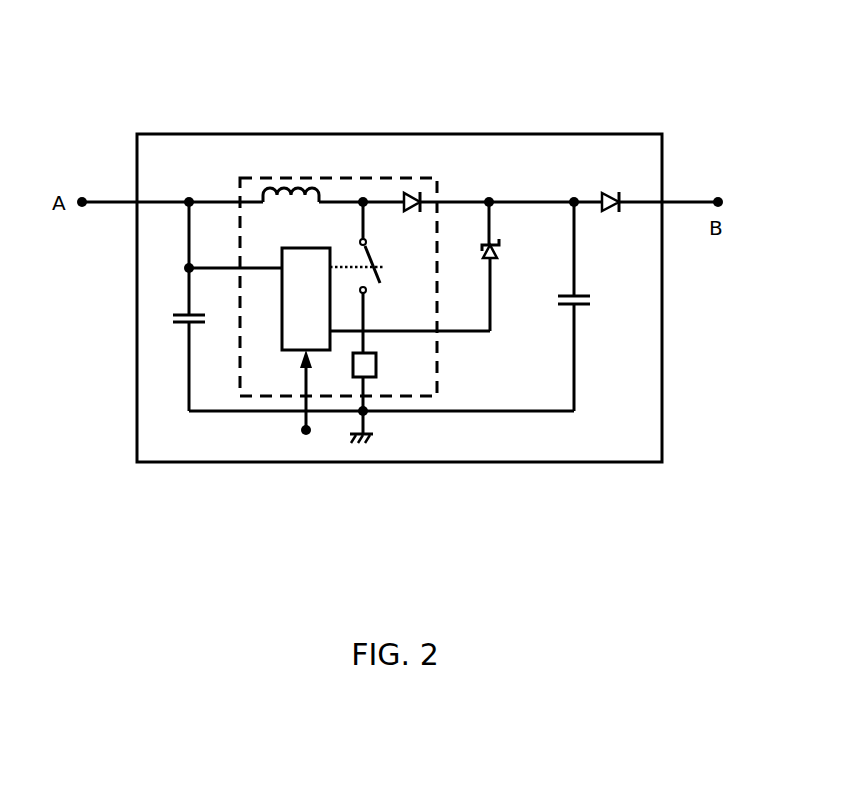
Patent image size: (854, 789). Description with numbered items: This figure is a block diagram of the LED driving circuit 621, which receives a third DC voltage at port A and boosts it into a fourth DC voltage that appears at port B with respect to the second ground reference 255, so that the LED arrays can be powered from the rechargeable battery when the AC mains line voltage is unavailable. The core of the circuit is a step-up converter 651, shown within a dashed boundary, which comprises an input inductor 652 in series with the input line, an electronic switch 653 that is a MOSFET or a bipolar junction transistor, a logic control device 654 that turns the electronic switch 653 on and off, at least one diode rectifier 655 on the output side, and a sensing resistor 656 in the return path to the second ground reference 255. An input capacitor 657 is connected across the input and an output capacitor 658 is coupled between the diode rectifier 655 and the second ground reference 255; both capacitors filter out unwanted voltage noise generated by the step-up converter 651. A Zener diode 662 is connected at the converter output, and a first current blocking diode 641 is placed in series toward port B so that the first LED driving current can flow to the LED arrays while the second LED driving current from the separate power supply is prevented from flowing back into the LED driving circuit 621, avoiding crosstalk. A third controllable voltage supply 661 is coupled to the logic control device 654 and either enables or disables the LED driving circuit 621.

The LED driving circuit 621 is at (362, 126).
The step-up converter 651 is at (243, 404).
The input inductor 652 is at (292, 183).
The electronic switch 653 is at (380, 284).
The logic control device 654 is at (281, 247).
The diode rectifier 655 is at (411, 192).
The sensing resistor 656 is at (376, 377).
The input capacitor 657 is at (183, 323).
The output capacitor 658 is at (587, 305).
The third controllable voltage supply 661 is at (304, 434).
The Zener diode 662 is at (493, 240).
The first current blocking diode 641 is at (610, 192).
The second ground reference 255 is at (355, 444).